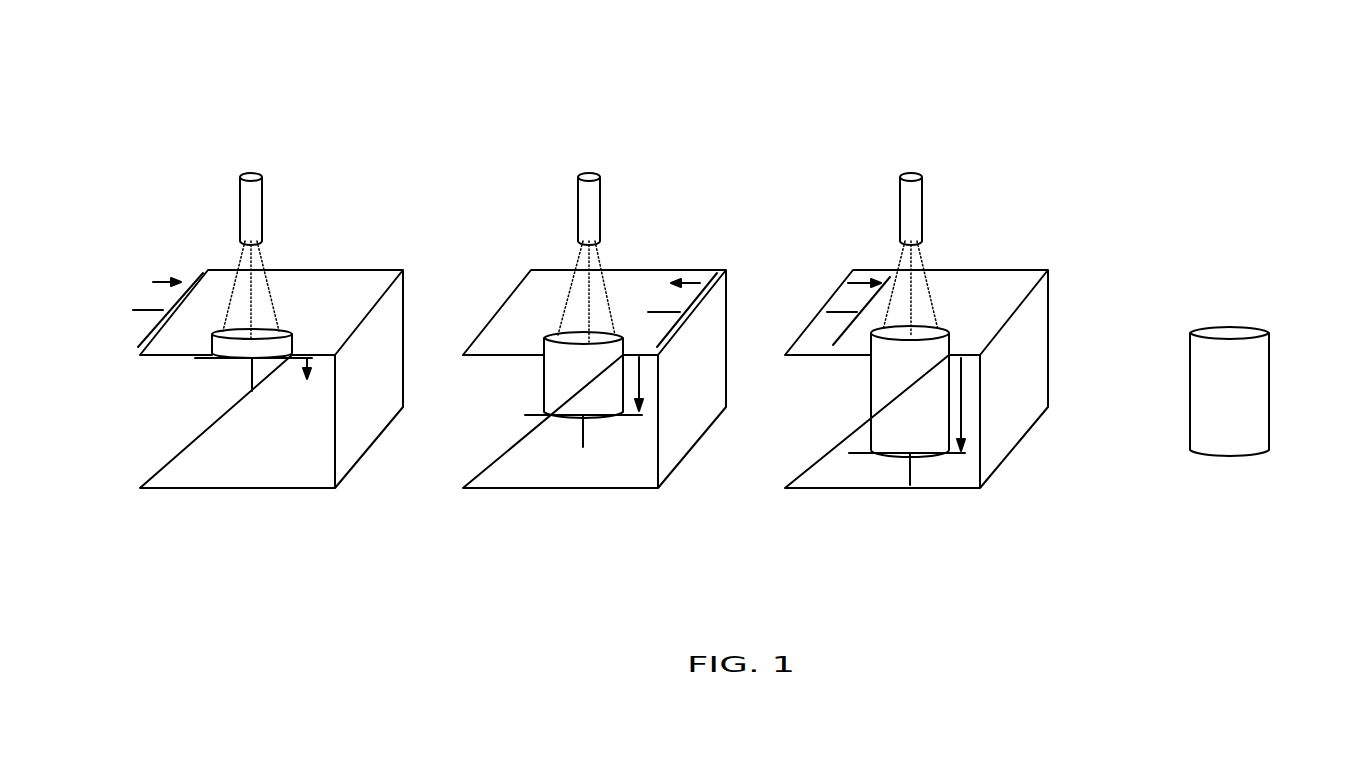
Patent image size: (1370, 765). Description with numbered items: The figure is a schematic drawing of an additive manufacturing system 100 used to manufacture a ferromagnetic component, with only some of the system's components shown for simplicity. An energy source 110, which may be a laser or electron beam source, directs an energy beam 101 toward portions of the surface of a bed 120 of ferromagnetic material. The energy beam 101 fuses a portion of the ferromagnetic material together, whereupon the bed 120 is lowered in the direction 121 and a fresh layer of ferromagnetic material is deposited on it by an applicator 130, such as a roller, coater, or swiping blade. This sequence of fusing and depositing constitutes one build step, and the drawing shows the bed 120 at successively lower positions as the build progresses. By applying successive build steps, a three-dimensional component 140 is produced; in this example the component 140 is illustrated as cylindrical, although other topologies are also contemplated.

The additive manufacturing system 100 is at (1200, 122).
The energy beam 101 is at (270, 293).
The energy source 110 is at (252, 177).
The bed of ferromagnetic material 120 is at (370, 277).
The direction 121 is at (307, 370).
The applicator 130 is at (152, 310).
The three-dimensional component 140 is at (1232, 333).